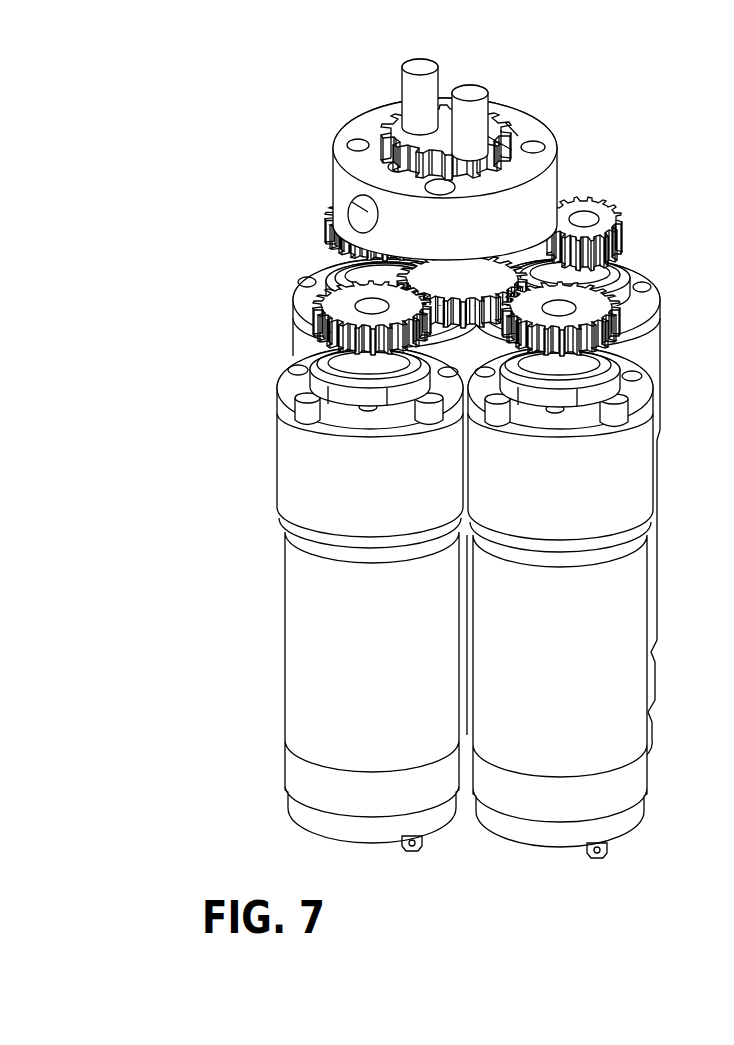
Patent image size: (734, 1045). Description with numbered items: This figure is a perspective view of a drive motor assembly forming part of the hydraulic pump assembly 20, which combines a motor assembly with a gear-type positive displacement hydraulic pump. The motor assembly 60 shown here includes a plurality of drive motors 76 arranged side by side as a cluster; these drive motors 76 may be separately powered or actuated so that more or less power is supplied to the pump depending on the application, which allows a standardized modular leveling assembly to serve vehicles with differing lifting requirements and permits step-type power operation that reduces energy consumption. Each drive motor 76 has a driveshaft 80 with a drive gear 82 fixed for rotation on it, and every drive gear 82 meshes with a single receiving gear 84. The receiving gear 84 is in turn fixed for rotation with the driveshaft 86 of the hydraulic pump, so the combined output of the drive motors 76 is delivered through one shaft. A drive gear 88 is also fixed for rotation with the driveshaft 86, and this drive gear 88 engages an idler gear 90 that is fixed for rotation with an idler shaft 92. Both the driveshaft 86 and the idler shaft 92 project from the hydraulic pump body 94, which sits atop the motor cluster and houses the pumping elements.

The hydraulic pump assembly 20 is at (487, 184).
The motor assembly 60 is at (467, 554).
The drive motor 76 is at (295, 332).
The driveshaft 80 is at (622, 245).
The drive gear 82 is at (592, 312).
The receiving gear 84 is at (560, 310).
The driveshaft 86 is at (472, 90).
The drive gear 88 is at (497, 138).
The idler gear 90 is at (387, 113).
The idler shaft 92 is at (415, 65).
The hydraulic pump body 94 is at (560, 168).